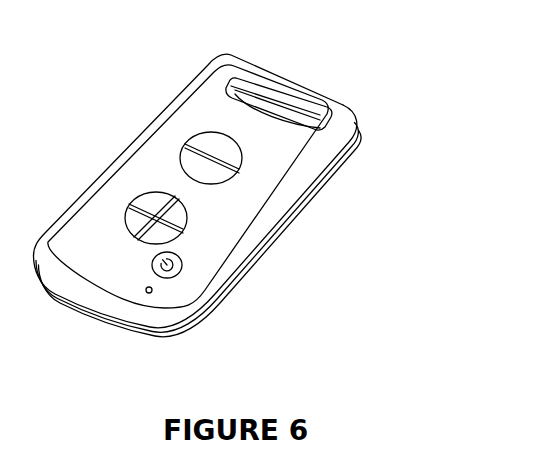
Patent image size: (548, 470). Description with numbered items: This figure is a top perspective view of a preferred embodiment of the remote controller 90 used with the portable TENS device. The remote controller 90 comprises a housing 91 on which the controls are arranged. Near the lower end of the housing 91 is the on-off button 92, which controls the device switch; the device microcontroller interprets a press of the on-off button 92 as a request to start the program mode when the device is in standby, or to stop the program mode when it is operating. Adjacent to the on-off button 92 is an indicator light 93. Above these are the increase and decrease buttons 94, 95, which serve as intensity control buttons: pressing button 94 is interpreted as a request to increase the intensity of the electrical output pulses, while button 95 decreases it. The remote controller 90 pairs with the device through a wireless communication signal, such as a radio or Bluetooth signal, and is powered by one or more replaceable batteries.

The remote controller 90 is at (242, 186).
The housing 91 is at (161, 108).
The on-off button 92 is at (186, 272).
The indicator light 93 is at (145, 295).
The increase button 94 is at (195, 223).
The decrease button 95 is at (250, 174).